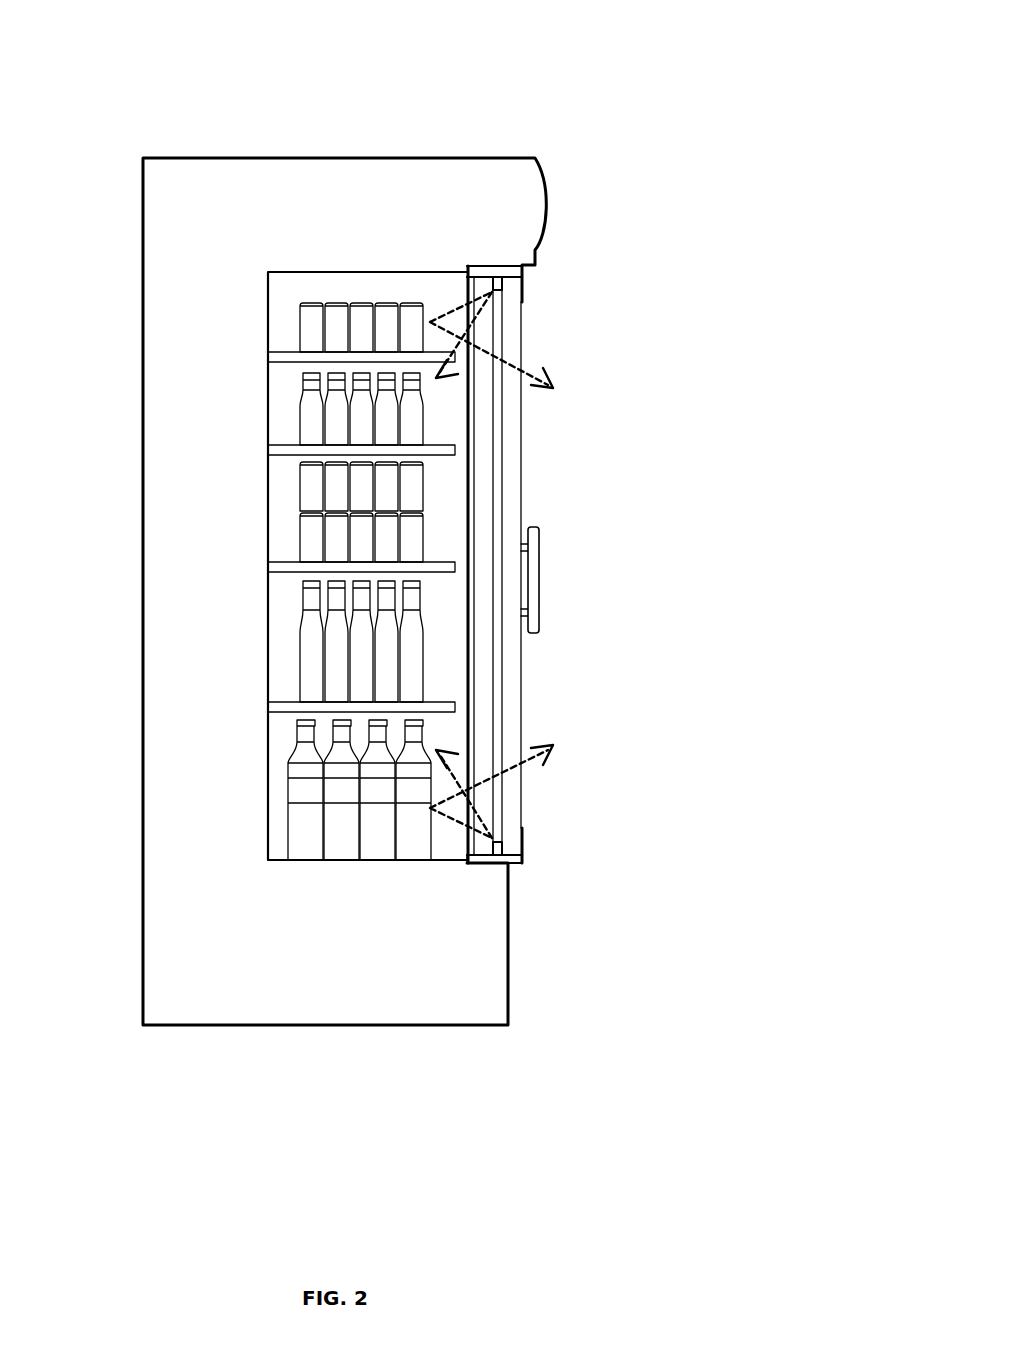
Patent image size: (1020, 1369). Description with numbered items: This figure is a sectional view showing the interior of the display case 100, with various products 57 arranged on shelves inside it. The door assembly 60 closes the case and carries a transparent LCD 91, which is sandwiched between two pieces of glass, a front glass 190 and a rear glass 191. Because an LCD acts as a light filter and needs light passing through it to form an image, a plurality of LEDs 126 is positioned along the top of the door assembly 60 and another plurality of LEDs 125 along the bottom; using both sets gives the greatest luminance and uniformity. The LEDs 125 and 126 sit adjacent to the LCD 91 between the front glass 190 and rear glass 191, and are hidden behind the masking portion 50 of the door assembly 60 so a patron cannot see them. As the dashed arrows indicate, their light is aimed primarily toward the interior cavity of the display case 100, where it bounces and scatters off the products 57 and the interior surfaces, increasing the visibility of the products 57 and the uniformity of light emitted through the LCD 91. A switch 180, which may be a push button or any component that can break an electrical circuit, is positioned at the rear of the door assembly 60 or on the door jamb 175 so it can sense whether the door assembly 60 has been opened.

The display case 100 is at (665, 60).
The products 57 is at (313, 650).
The masking portion 50 is at (522, 288).
The LEDs 126 is at (495, 289).
The LEDs 125 is at (497, 853).
The rear glass 191 is at (483, 395).
The transparent LCD 91 is at (497, 458).
The front glass 190 is at (510, 655).
The switch 180 is at (468, 858).
The door jamb 175 is at (467, 835).
The door assembly 60 is at (565, 756).